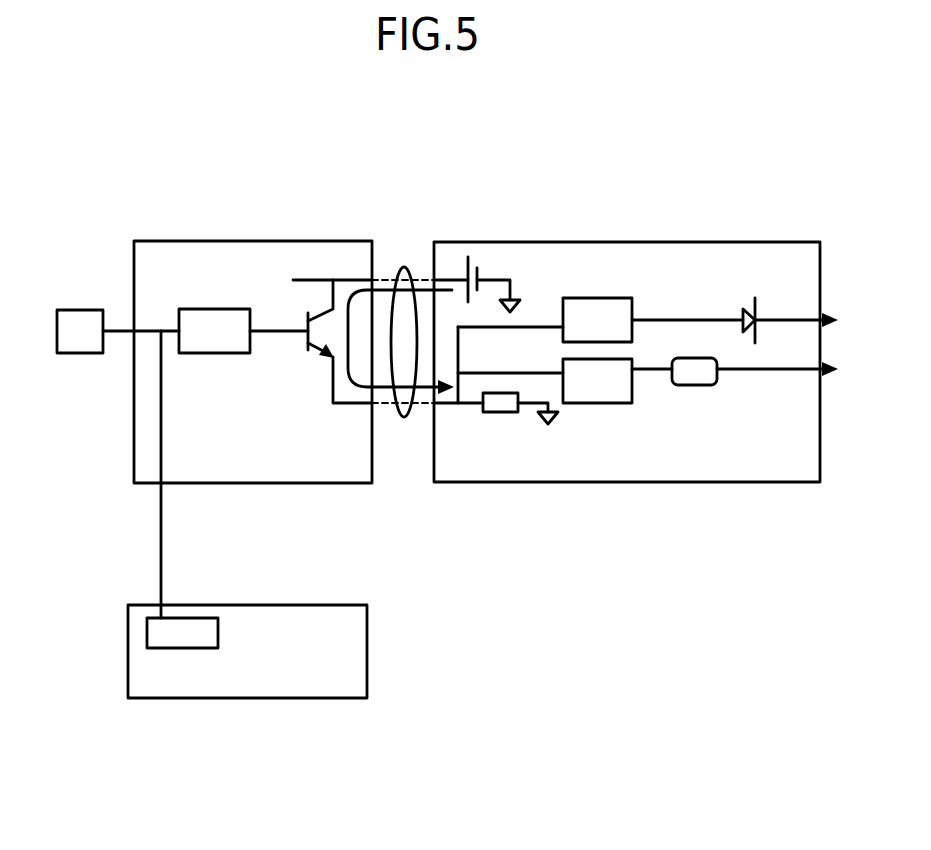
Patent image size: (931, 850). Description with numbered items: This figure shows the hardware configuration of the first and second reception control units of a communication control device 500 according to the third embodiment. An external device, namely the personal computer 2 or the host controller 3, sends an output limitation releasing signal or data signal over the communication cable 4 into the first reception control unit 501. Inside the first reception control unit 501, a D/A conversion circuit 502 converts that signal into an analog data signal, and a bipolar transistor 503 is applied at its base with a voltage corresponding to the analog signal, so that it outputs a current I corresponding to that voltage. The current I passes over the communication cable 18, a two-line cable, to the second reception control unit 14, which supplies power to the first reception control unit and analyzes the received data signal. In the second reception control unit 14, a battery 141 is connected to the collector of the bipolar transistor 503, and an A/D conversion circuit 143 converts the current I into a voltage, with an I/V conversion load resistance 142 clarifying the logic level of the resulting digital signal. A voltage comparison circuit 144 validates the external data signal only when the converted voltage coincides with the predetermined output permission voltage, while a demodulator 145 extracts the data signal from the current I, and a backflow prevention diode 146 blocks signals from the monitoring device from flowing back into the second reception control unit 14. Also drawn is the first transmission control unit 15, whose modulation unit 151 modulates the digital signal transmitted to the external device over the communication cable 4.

The communication control device 500 is at (552, 157).
The personal computer 2 is at (80, 283).
The host controller 3 is at (80, 310).
The communication cable 4 is at (116, 325).
The first reception control unit 501 is at (222, 241).
The D/A conversion circuit 502 is at (211, 353).
The bipolar transistor 503 is at (306, 322).
The communication cable 18 is at (404, 267).
The current I is at (355, 382).
The second reception control unit 14 is at (790, 241).
The battery 141 is at (481, 268).
The I/V conversion load resistance 142 is at (499, 412).
The A/D conversion circuit 143 is at (597, 403).
The voltage comparison circuit 144 is at (697, 385).
The demodulator 145 is at (597, 298).
The backflow prevention diode 146 is at (748, 310).
The first transmission control unit 15 is at (367, 642).
The modulation unit 151 is at (148, 632).